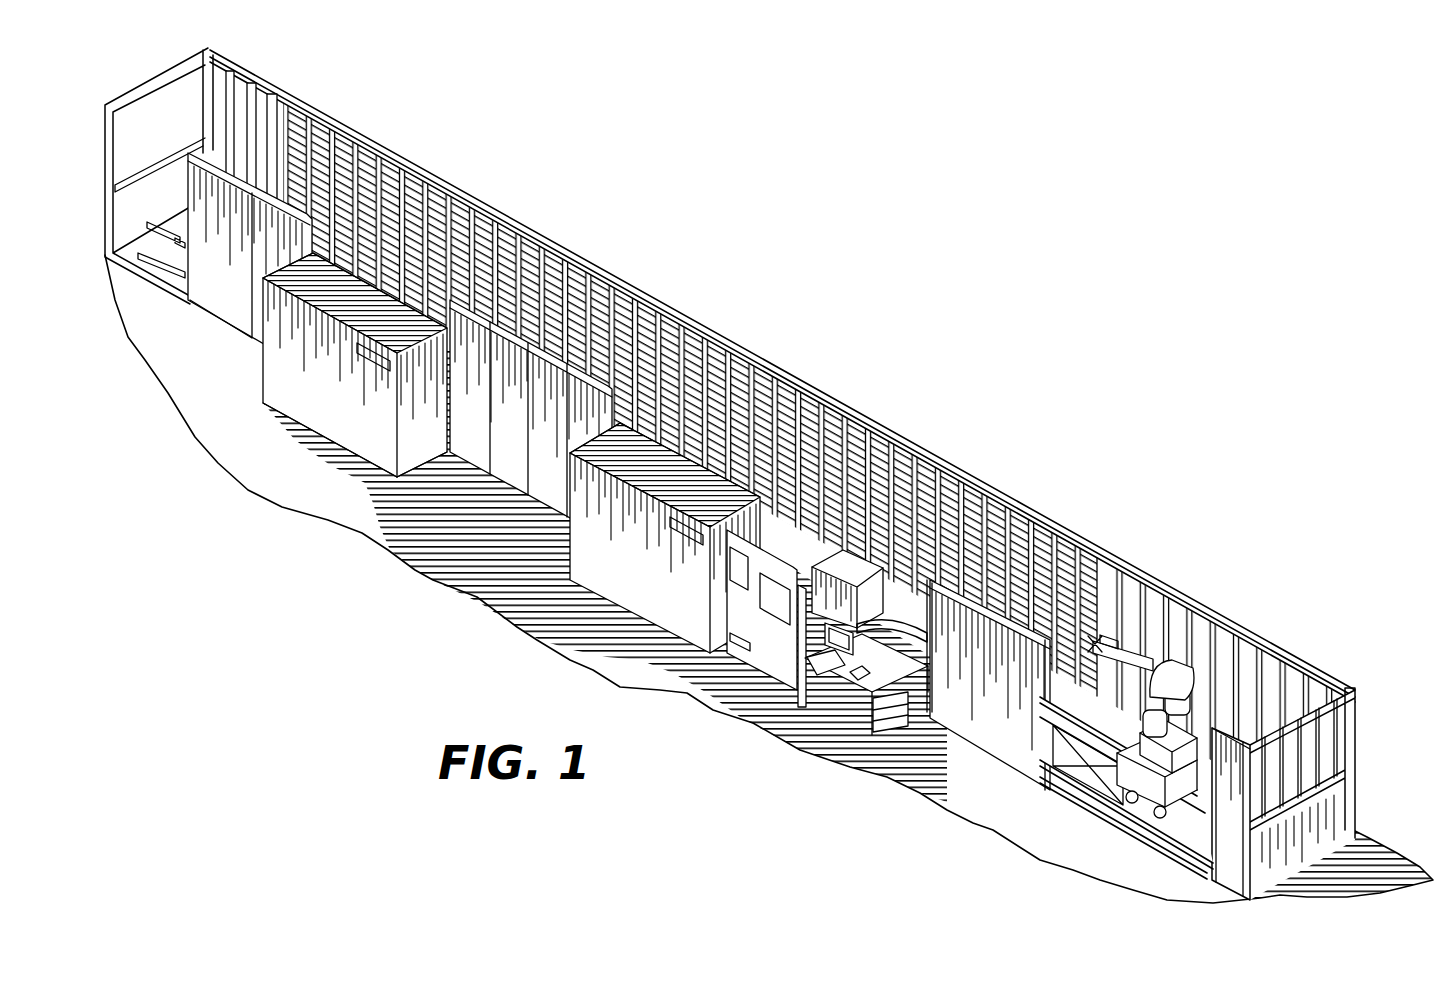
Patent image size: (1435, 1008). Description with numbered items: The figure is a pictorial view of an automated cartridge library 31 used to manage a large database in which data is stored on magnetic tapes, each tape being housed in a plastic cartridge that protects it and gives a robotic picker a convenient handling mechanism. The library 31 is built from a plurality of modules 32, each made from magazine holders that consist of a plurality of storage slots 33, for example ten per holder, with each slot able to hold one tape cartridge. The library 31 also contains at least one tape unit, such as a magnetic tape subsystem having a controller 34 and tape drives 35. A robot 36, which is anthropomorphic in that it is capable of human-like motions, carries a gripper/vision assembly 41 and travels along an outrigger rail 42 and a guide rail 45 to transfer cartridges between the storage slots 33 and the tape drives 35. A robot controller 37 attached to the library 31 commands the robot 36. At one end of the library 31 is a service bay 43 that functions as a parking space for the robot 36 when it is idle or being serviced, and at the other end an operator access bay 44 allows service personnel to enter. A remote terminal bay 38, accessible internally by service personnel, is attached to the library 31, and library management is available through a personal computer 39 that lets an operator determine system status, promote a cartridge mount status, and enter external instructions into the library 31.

The automated cartridge library 31 is at (730, 474).
The modules 32 is at (228, 312).
The storage slots 33 is at (741, 358).
The controller 34 is at (360, 462).
The tape drives 35 is at (313, 407).
The robot 36 is at (1156, 658).
The robot controller 37 is at (768, 661).
The remote terminal bay 38 is at (844, 565).
The personal computer 39 is at (850, 678).
The gripper/vision assembly 41 is at (1100, 636).
The outrigger rail 42 is at (1062, 777).
The service bay 43 is at (1123, 750).
The operator access bay 44 is at (168, 180).
The guide rail 45 is at (1127, 765).